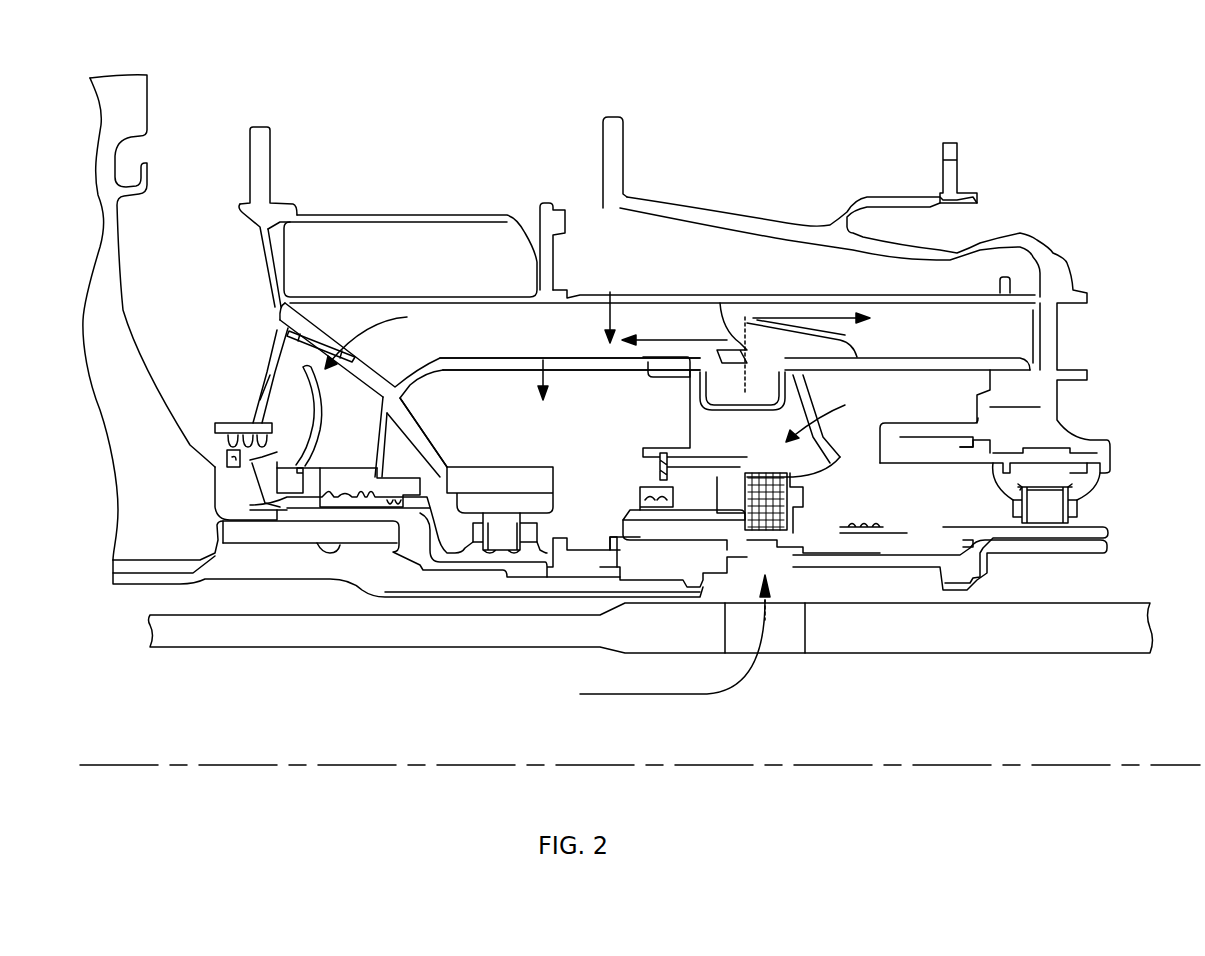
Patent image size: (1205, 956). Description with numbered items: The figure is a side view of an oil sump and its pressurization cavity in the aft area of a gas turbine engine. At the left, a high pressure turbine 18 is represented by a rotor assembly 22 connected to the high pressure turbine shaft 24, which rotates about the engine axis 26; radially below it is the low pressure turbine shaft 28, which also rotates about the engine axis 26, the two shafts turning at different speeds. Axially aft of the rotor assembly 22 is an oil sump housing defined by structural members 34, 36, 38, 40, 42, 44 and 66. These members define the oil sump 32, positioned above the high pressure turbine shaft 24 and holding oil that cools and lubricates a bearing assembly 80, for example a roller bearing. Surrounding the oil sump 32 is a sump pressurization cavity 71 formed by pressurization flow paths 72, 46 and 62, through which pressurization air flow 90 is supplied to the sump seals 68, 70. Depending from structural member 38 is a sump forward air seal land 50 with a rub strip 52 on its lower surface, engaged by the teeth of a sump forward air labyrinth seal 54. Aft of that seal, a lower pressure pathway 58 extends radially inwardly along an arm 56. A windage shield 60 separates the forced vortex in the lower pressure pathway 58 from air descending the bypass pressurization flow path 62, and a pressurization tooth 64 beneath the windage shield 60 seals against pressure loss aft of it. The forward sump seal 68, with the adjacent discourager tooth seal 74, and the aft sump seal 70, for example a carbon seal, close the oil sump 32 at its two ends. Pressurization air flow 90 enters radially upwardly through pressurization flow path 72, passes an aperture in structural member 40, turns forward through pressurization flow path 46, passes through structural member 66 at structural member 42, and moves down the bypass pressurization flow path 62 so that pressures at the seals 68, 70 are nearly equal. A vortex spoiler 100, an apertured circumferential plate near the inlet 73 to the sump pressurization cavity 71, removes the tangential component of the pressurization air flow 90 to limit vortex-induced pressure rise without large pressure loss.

The high pressure turbine 18 is at (172, 297).
The rotor assembly 22 is at (165, 95).
The high pressure turbine shaft 24 is at (132, 581).
The engine axis 26 is at (280, 762).
The low pressure turbine shaft 28 is at (406, 633).
The oil sump 32 is at (545, 358).
The structural member 34 is at (277, 263).
The structural member 36 is at (412, 297).
The structural member 38 is at (262, 375).
The structural member 40 is at (520, 358).
The structural member 42 is at (405, 410).
The structural member 44 is at (393, 420).
The pressurization flow path 46 is at (612, 292).
The sump forward air seal land 50 is at (227, 423).
The rub strip 52 is at (230, 447).
The sump forward air labyrinth seal 54 is at (227, 452).
The arm 56 is at (247, 478).
The lower pressure pathway 58 is at (280, 452).
The windage shield 60 is at (318, 407).
The bypass pressurization flow path 62 is at (343, 427).
The pressurization tooth 64 is at (285, 498).
The structural member 66 is at (348, 357).
The sump seal 68 is at (363, 521).
The aft sump seal 70 is at (678, 466).
The sump pressurization cavity 71 is at (850, 407).
The pressurization flow path 72 is at (783, 453).
The inlet 73 is at (790, 468).
The discourager tooth seal 74 is at (328, 496).
The bearing assembly 80 is at (518, 466).
The pressurization air flow 90 is at (355, 325).
The vortex spoiler 100 is at (768, 538).